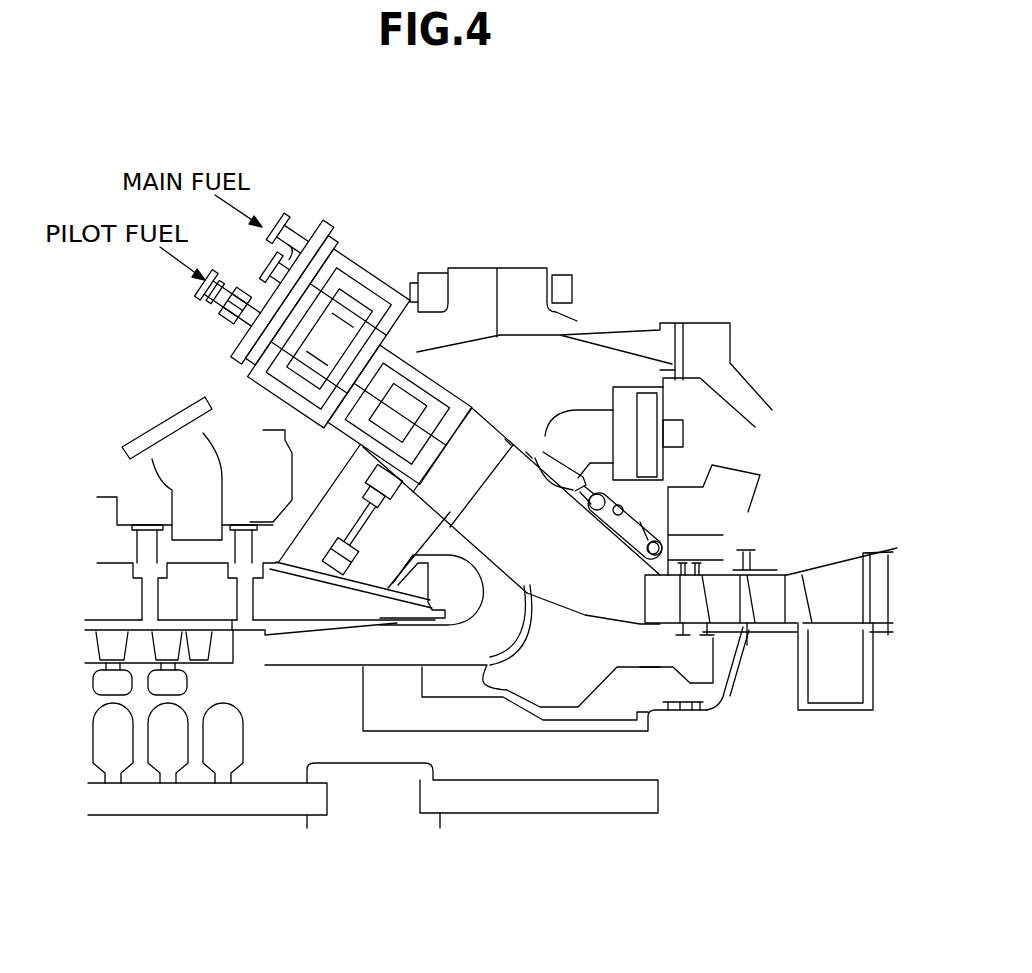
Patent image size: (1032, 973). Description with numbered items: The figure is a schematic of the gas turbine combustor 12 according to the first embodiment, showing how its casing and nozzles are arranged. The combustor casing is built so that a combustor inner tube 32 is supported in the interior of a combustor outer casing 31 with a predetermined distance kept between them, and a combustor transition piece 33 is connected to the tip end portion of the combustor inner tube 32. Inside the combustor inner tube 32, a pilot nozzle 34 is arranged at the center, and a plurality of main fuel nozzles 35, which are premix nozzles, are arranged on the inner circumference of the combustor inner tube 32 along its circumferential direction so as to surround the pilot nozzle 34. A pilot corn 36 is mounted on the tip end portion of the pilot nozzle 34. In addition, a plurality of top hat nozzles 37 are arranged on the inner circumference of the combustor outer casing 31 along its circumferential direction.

The combustor 12 is at (591, 258).
The combustor outer casing 31 is at (245, 385).
The combustor inner tube 32 is at (400, 414).
The combustor transition piece 33 is at (500, 427).
The pilot nozzle 34 is at (548, 336).
The main fuel nozzles 35 is at (287, 295).
The pilot corn 36 is at (420, 430).
The top hat nozzles 37 is at (329, 338).